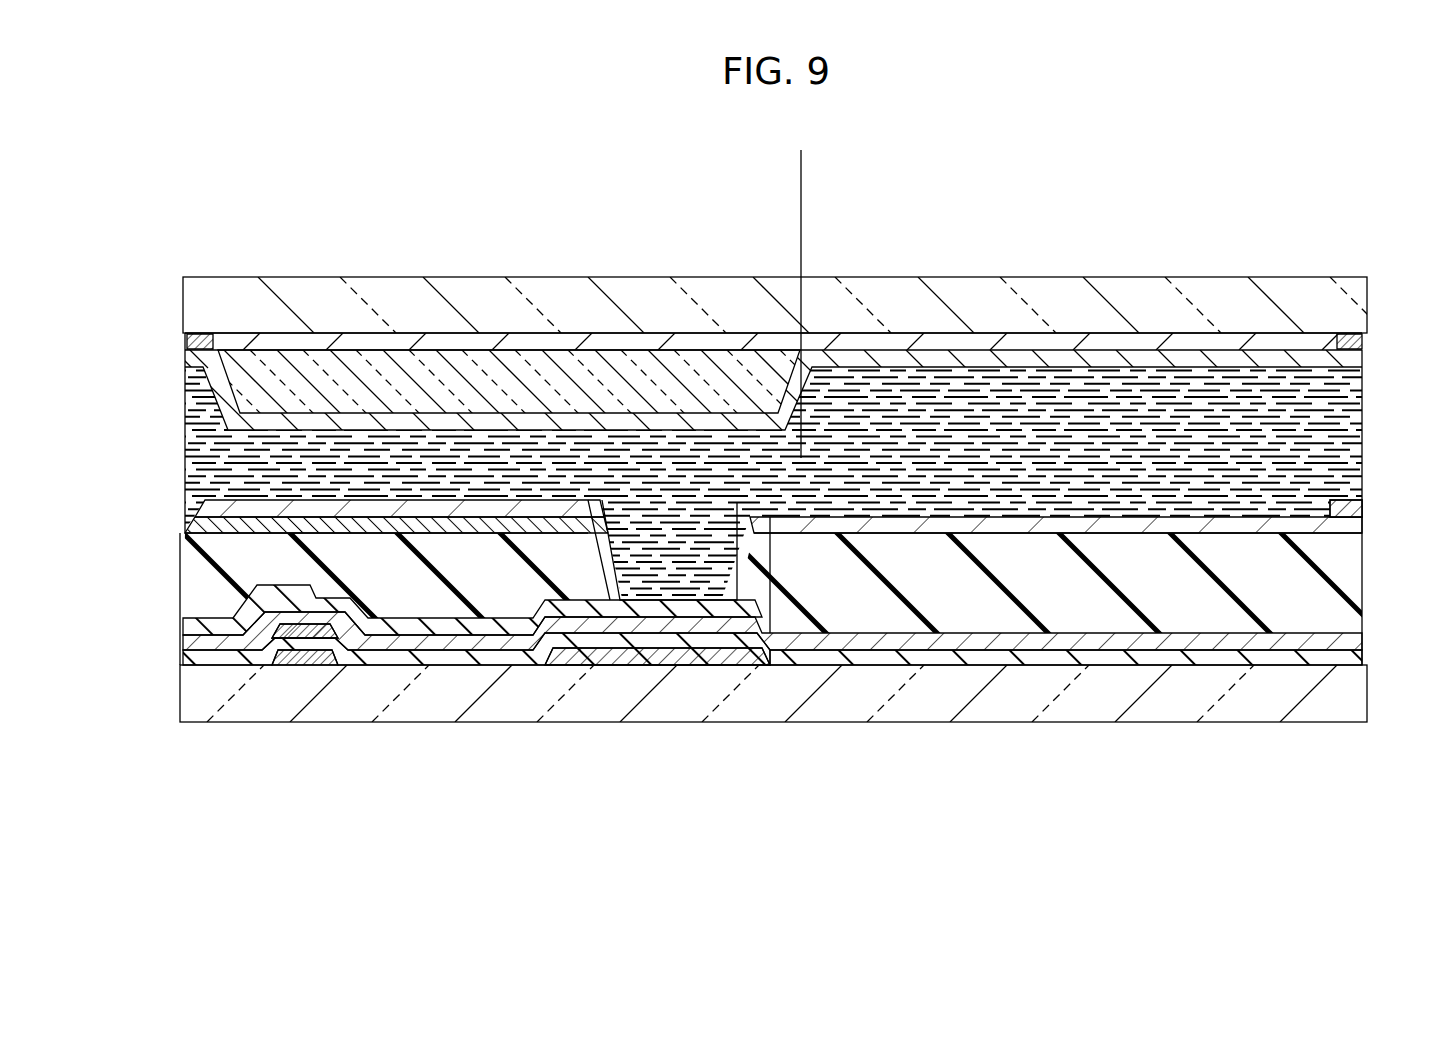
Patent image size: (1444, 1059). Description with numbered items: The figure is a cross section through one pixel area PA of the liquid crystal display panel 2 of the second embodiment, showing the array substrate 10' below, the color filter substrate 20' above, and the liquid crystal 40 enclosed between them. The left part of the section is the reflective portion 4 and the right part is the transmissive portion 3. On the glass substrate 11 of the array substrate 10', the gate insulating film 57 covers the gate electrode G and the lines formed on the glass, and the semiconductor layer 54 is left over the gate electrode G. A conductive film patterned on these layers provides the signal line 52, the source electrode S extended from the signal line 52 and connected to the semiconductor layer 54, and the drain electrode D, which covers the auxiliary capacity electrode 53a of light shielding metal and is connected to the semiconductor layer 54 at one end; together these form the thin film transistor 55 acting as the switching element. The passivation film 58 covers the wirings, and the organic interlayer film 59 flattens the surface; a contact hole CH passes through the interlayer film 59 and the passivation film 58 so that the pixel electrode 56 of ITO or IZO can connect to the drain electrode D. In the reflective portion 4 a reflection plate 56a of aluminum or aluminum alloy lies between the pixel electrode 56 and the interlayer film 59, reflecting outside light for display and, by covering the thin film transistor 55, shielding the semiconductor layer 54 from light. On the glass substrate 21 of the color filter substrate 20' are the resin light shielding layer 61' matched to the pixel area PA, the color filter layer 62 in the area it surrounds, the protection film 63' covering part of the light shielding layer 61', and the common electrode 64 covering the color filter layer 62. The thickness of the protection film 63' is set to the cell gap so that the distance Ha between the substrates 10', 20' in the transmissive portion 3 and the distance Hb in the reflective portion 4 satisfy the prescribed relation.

The liquid crystal display panel 2 is at (948, 102).
The transmissive portion 3 is at (800, 190).
The reflective portion 4 is at (742, 198).
The pixel area PA is at (418, 159).
The array substrate 10' is at (771, 660).
The glass substrate 11 is at (910, 690).
The color filter substrate 20' is at (758, 298).
The glass substrate 21 is at (476, 318).
The liquid crystal 40 is at (198, 440).
The signal line 52 is at (210, 655).
The auxiliary capacity electrode 53a is at (683, 655).
The semiconductor layer 54 is at (343, 640).
The thin film transistor 55 is at (240, 565).
The pixel electrode 56 is at (1330, 508).
The reflection plate 56a is at (228, 503).
The gate insulating film 57 is at (497, 655).
The passivation film 58 is at (193, 620).
The interlayer film 59 is at (205, 585).
The resin light shielding layer 61' is at (780, 281).
The color filter layer 62 is at (1130, 340).
The protection film 63' is at (507, 313).
The common electrode 64 is at (1222, 358).
The source electrode S is at (248, 660).
The gate electrode G is at (305, 665).
The drain electrode D is at (448, 640).
The contact hole CH is at (676, 570).
The distance between substrates in transmissive portion Ha is at (1127, 369).
The distance between substrates in reflective portion Hb is at (510, 432).